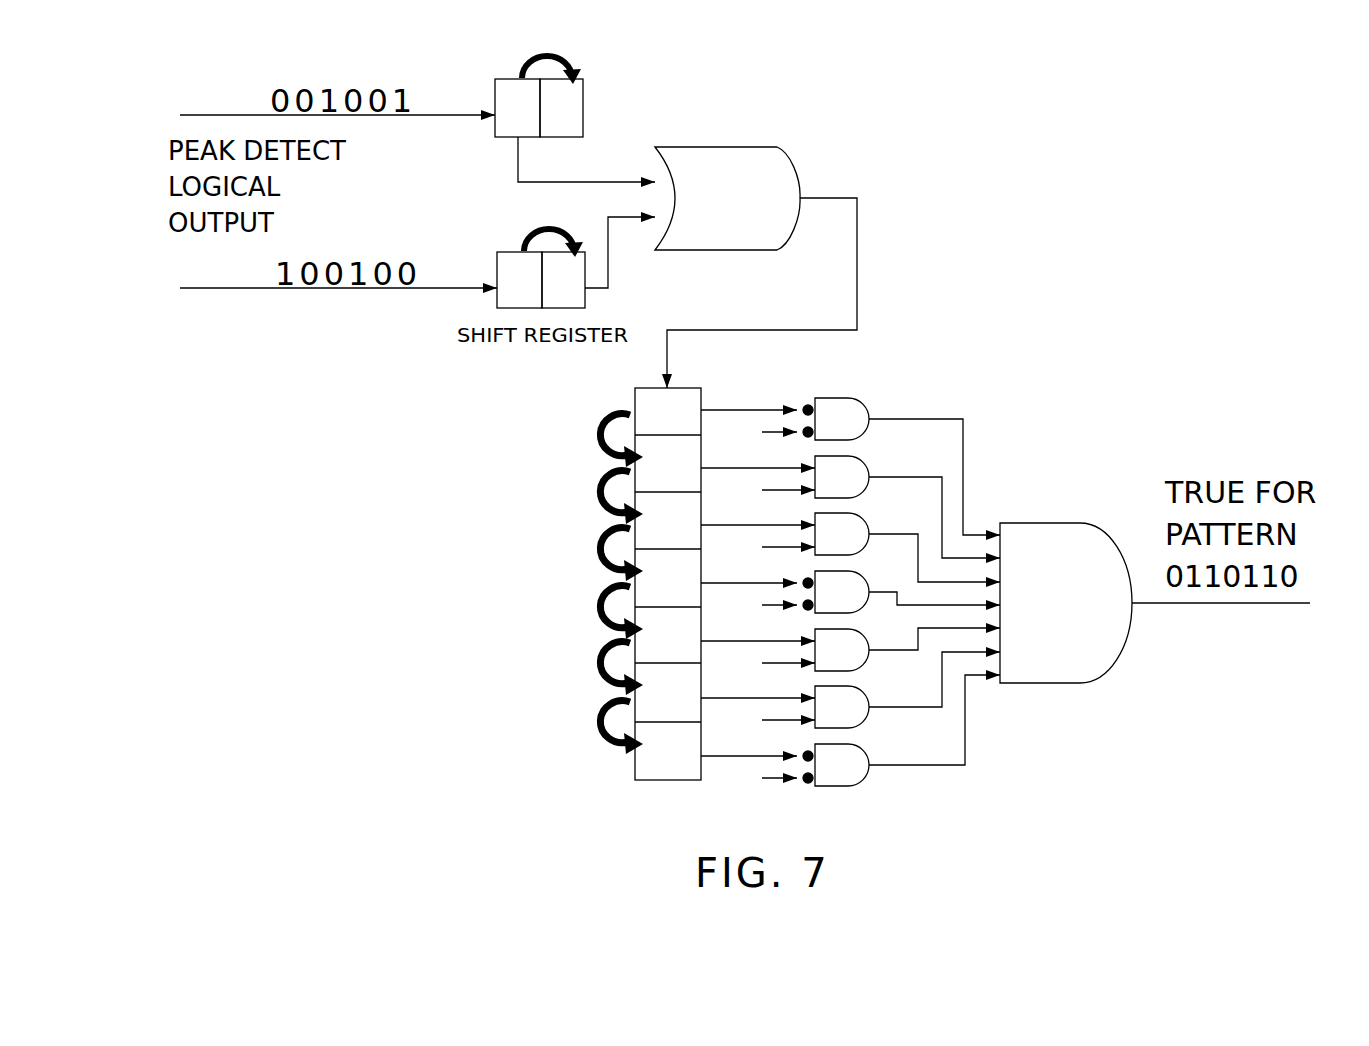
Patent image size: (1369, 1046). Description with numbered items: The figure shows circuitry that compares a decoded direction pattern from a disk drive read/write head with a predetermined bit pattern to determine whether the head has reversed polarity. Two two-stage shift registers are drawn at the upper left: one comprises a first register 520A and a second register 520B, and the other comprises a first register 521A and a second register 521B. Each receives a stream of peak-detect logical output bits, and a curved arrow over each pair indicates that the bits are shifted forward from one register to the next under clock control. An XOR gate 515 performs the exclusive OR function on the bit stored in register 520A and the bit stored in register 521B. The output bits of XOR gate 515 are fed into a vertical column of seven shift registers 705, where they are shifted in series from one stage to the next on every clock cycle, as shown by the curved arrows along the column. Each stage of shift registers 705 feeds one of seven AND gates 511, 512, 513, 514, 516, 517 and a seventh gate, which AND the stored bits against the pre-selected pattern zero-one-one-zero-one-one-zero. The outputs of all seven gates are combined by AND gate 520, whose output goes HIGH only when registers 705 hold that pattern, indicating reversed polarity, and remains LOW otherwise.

The first register 520A is at (507, 78).
The second register 520B is at (587, 96).
The first register 521A is at (497, 302).
The second register 521B is at (588, 300).
The XOR gate 515 is at (757, 147).
The shift registers 705 is at (647, 781).
The AND gate 511 is at (840, 398).
The AND gate 512 is at (857, 468).
The AND gate 513 is at (862, 525).
The AND gate 514 is at (860, 582).
The AND gate 516 is at (860, 697).
The AND gate 517 is at (862, 755).
The AND gate 520 is at (1040, 523).